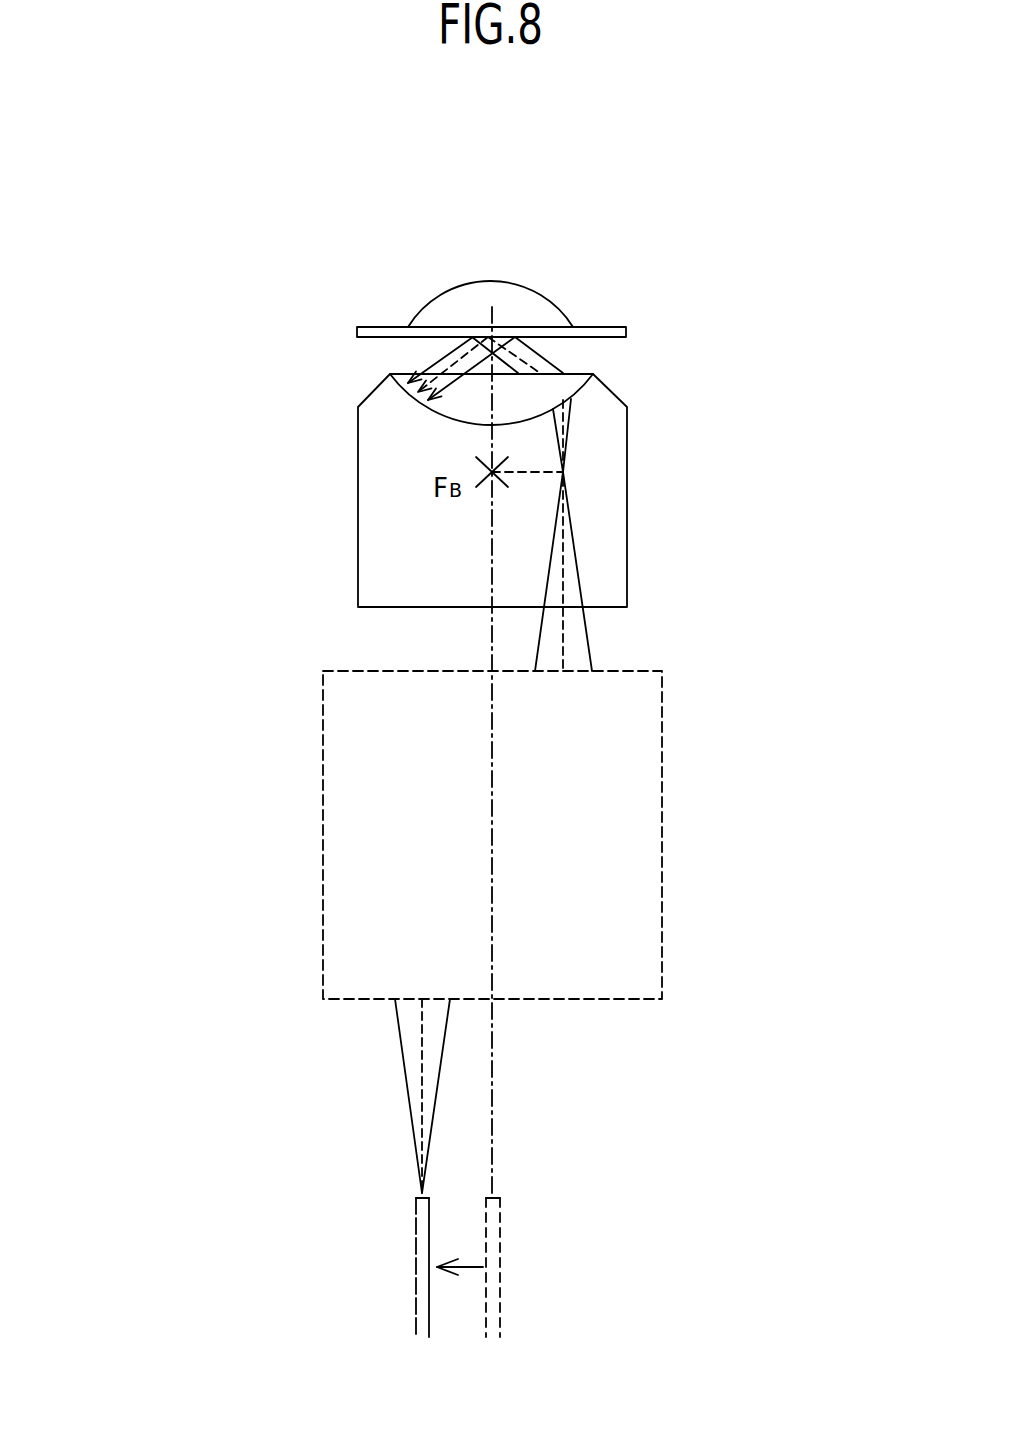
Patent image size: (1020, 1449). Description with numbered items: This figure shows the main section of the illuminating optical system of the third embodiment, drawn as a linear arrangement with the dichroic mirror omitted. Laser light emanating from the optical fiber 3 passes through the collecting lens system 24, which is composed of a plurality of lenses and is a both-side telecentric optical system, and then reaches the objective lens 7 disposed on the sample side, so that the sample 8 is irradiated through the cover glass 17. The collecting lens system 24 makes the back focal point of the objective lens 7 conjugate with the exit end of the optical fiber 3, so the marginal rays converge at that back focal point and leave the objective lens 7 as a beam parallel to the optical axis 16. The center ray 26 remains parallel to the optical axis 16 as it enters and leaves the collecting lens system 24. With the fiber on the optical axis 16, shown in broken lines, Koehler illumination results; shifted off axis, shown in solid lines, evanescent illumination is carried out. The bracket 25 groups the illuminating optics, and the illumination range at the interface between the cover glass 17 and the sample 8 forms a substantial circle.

The optical fiber 3 is at (422, 1315).
The objective lens 7 is at (363, 437).
The sample 8 is at (453, 302).
The optical axis 16 is at (493, 1085).
The cover glass 17 is at (362, 333).
The collecting lens system 24 is at (352, 705).
The optical system 25 is at (195, 445).
The center ray (chief ray) 26 is at (563, 640).